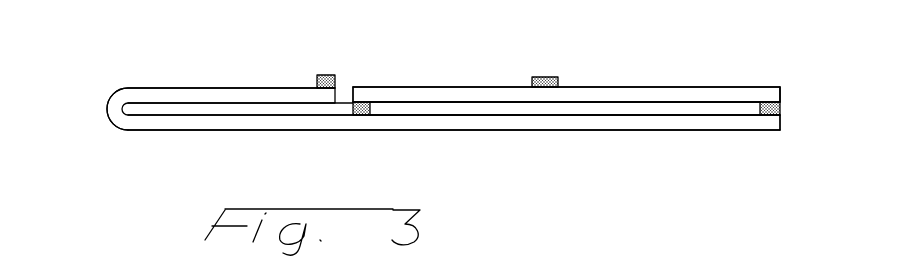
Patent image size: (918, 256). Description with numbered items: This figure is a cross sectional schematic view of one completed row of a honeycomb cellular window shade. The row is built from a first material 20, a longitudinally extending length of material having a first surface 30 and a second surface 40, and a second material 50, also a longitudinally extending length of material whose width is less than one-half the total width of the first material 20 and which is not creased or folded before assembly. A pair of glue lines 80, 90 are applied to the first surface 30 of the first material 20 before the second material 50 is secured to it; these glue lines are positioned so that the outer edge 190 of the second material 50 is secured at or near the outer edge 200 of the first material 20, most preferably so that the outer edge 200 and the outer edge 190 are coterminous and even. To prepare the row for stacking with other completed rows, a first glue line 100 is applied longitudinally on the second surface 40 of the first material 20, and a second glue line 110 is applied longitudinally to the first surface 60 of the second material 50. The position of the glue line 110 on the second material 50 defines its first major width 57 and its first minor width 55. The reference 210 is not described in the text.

The first material 20 is at (228, 130).
The first surface of first material 30 is at (522, 109).
The second surface of first material 40 is at (238, 84).
The second material 50 is at (655, 87).
The first minor width 55 is at (470, 103).
The first major width 57 is at (647, 103).
The first surface of second material 60 is at (467, 85).
The glue line 80 is at (353, 105).
The glue line 90 is at (780, 108).
The first glue line 100 is at (325, 75).
The second glue line 110 is at (560, 77).
The outer edge of second material 190 is at (773, 85).
The outer edge of first material 200 is at (763, 131).
The left end of upper layer 210 is at (365, 86).